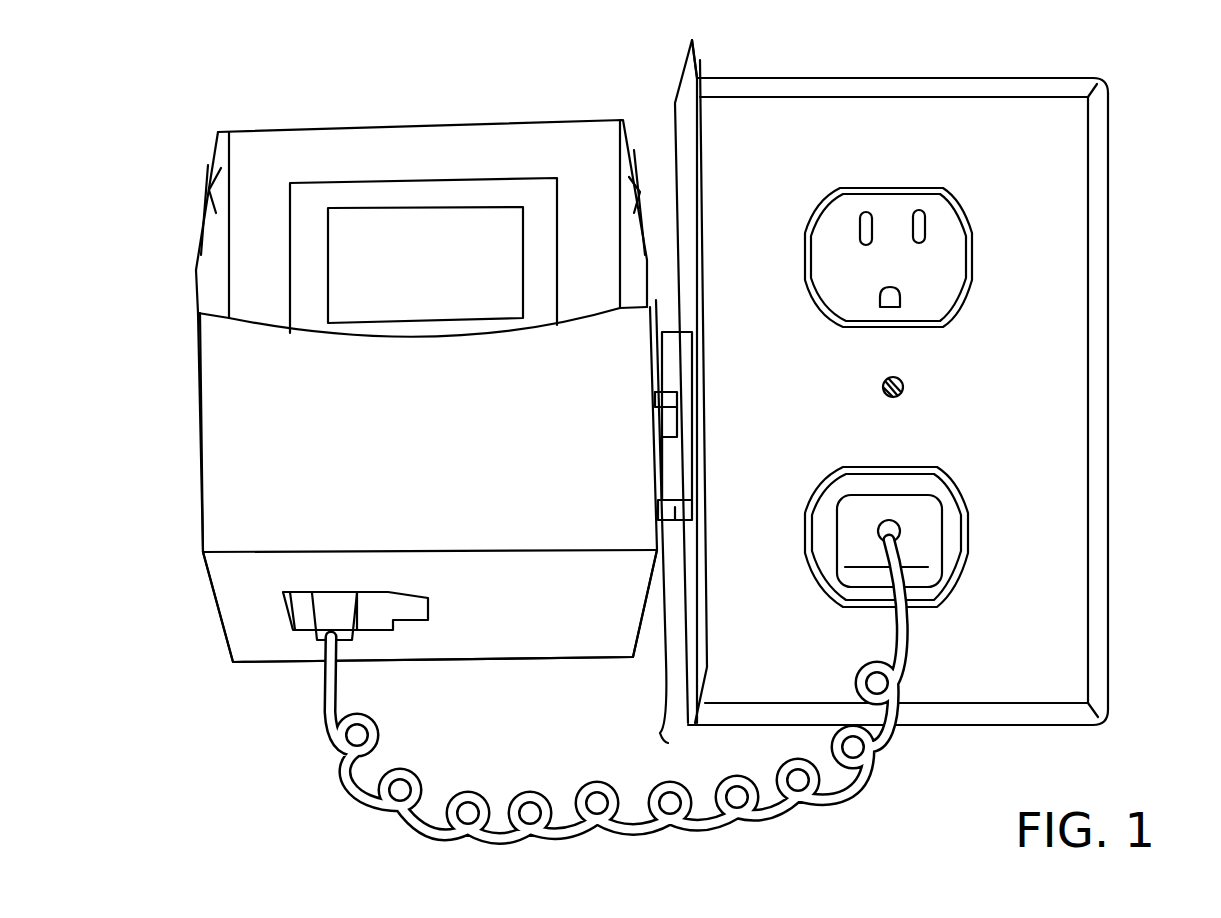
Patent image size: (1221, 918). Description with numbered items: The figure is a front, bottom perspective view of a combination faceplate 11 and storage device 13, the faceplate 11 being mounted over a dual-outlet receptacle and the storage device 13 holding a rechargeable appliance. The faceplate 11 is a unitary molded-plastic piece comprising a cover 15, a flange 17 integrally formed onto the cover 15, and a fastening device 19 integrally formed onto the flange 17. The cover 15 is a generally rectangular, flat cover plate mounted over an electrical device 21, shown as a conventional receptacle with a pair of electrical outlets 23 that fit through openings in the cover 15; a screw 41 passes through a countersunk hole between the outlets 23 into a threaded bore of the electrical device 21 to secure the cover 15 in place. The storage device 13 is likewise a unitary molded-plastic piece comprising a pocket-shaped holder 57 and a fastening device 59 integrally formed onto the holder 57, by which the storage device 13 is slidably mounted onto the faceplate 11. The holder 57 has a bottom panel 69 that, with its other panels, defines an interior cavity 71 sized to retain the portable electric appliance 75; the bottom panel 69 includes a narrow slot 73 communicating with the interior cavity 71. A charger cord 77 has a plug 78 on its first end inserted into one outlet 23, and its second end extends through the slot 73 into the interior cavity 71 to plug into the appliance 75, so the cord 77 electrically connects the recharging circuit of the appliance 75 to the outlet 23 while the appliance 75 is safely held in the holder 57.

The faceplate 11 is at (1123, 604).
The storage device 13 is at (213, 672).
The cover 15 is at (940, 122).
The flange 17 is at (698, 42).
The fastening device 19 is at (678, 348).
The electrical device 21 is at (975, 270).
The electrical outlets 23 is at (967, 230).
The screw 41 is at (905, 390).
The pocket-shaped holder 57 is at (240, 447).
The fastening device 59 is at (681, 532).
The bottom panel 69 is at (574, 640).
The interior cavity 71 is at (253, 190).
The narrow slot 73 is at (385, 608).
The electric appliance 75 is at (445, 285).
The charger cord 77 is at (855, 792).
The plug 78 is at (933, 520).